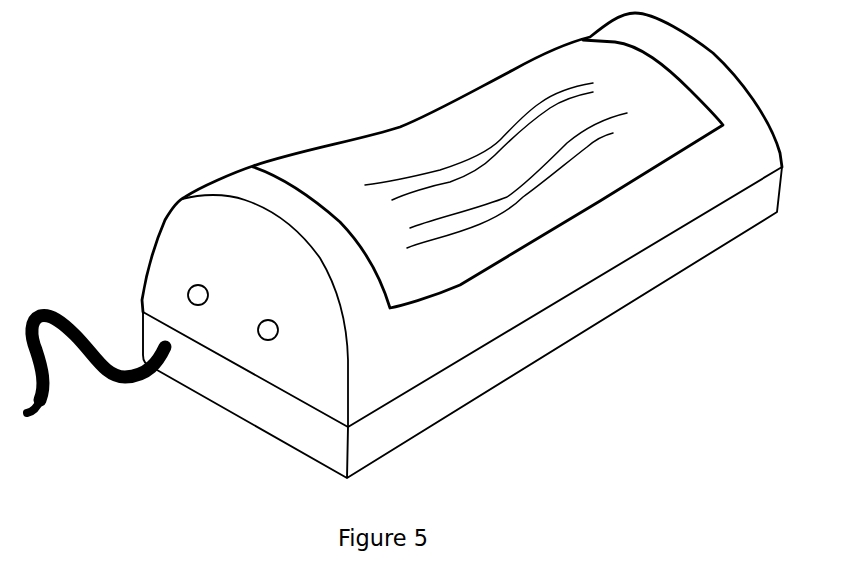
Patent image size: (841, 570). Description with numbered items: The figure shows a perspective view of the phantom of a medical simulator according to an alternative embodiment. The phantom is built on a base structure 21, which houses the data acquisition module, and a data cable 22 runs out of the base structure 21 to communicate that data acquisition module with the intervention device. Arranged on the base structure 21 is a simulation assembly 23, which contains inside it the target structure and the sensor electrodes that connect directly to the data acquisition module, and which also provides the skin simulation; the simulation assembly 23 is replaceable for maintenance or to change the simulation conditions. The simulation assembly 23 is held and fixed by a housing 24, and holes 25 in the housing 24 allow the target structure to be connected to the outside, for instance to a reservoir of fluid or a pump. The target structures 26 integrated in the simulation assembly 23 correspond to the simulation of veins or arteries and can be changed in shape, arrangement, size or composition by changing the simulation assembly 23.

The base structure 21 is at (532, 350).
The data cable 22 is at (72, 313).
The simulation assembly 23 is at (397, 143).
The housing 24 is at (767, 95).
The holes 25 is at (269, 313).
The target structures 26 is at (632, 125).